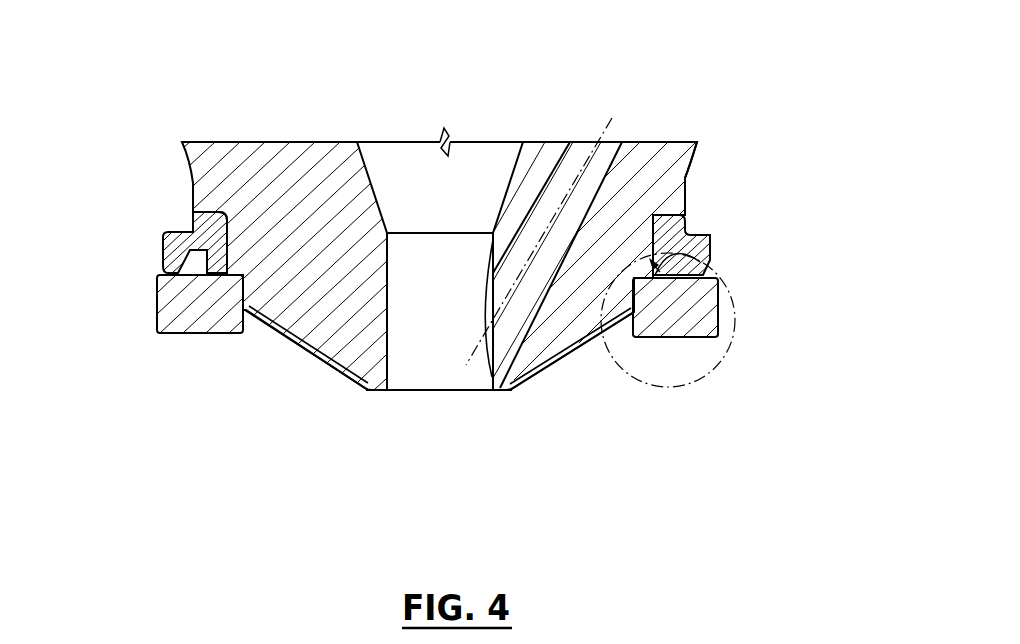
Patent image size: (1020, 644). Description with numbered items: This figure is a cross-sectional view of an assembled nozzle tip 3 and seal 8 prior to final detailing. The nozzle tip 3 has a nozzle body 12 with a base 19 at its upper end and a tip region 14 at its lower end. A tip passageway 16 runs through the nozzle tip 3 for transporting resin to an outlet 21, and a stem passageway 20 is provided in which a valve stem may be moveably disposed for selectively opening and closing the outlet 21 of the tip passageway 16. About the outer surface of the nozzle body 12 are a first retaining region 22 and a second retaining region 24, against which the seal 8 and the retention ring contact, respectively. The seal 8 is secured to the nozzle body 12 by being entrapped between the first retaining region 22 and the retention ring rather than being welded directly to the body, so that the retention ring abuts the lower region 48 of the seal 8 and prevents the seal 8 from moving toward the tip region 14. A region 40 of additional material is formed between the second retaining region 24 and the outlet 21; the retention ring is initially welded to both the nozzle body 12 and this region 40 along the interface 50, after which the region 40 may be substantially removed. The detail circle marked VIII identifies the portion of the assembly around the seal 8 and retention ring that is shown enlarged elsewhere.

The nozzle tip 3 is at (128, 158).
The seal 8 is at (705, 237).
The nozzle body 12 is at (693, 155).
The tip region 14 is at (193, 359).
The tip passageway 16 is at (412, 393).
The base 19 is at (683, 100).
The stem passageway 20 is at (518, 300).
The outlet 21 is at (462, 400).
The first retaining region 22 is at (677, 205).
The second retaining region 24 is at (715, 262).
The region of additional material 40 is at (320, 362).
The lower region of the seal 48 is at (218, 262).
The interface 50 is at (258, 305).
The detail VIII circle VIII is at (728, 303).